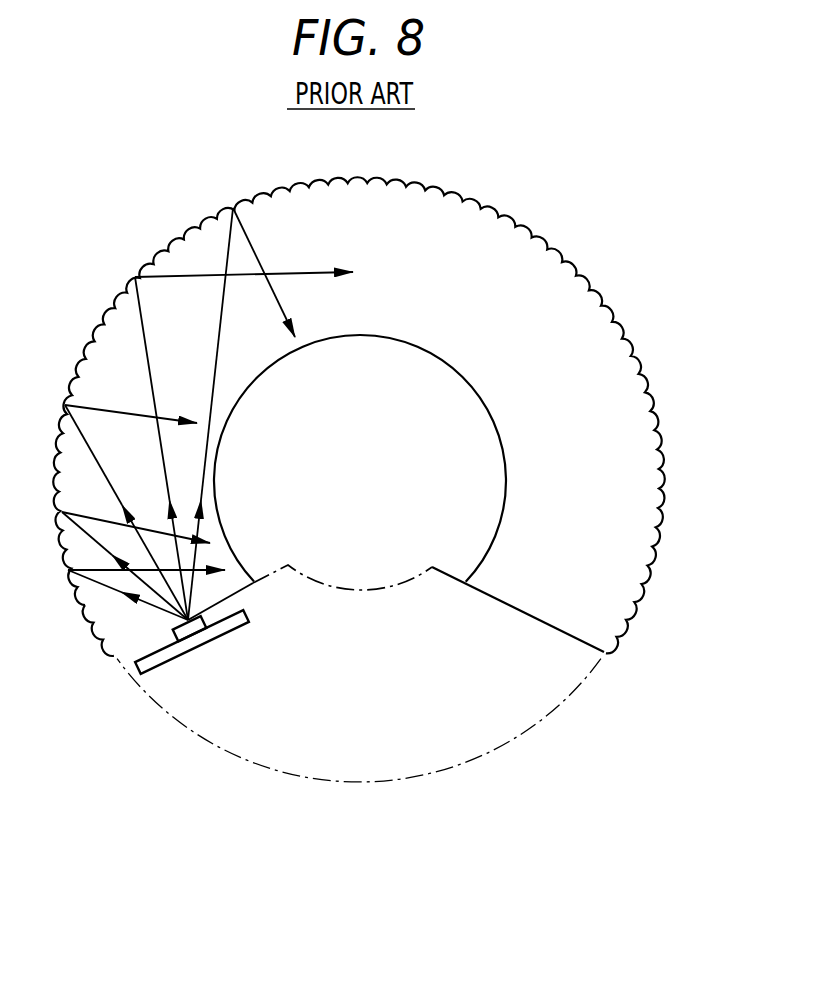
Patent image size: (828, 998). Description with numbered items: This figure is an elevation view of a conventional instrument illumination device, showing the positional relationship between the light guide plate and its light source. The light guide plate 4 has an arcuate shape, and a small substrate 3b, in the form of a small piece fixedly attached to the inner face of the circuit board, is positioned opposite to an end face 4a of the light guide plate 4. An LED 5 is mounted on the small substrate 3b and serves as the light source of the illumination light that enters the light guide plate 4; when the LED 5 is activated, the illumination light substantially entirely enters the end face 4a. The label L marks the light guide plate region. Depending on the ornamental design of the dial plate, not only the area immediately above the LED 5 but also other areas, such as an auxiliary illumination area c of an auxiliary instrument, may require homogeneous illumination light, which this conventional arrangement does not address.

The light guide plate 4 is at (532, 237).
The end face of light guide plate 4a is at (118, 657).
The light L is at (613, 301).
The auxiliary illumination area c is at (350, 779).
The small substrate 3b is at (222, 620).
The LED 5 is at (192, 633).